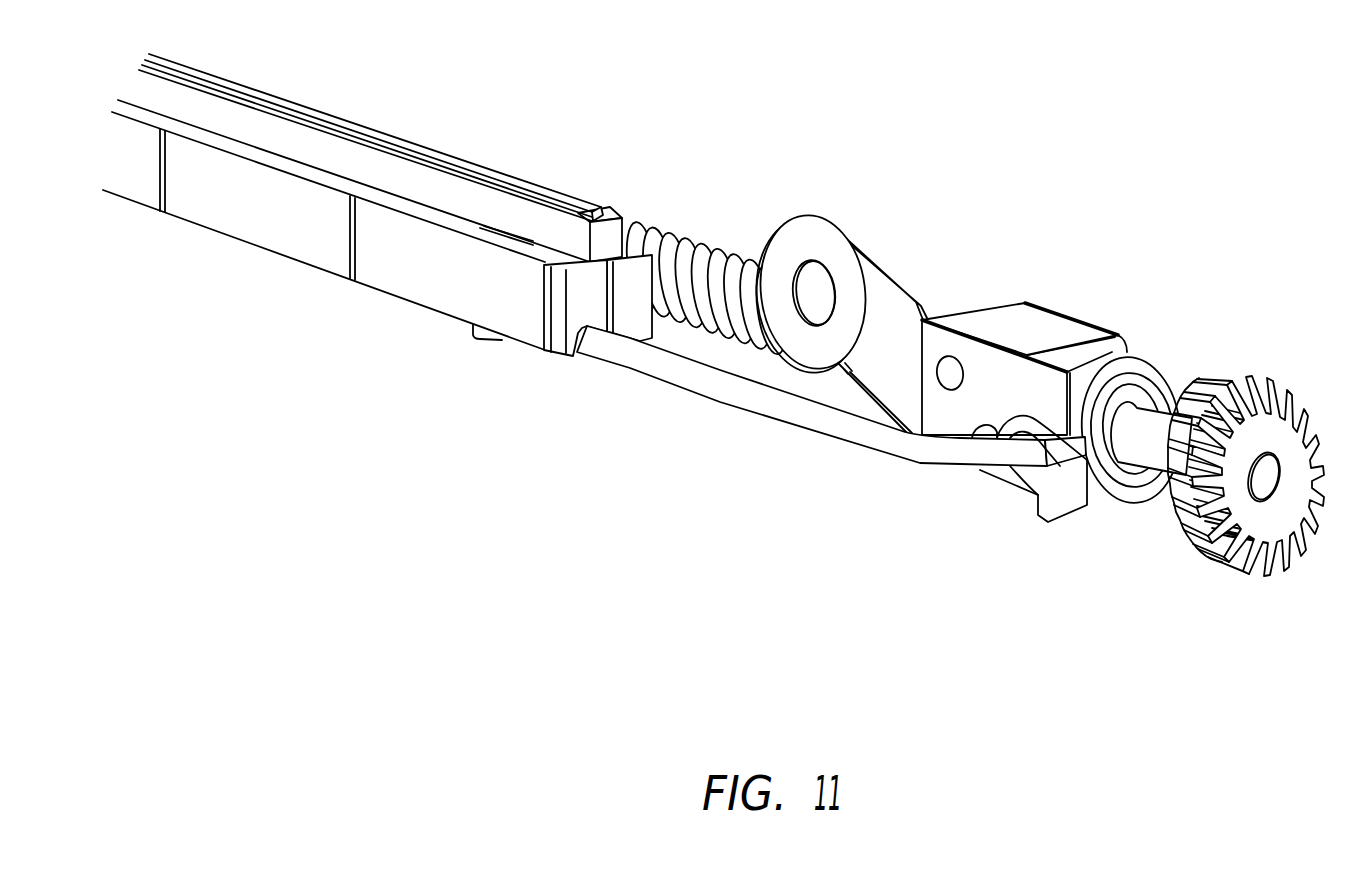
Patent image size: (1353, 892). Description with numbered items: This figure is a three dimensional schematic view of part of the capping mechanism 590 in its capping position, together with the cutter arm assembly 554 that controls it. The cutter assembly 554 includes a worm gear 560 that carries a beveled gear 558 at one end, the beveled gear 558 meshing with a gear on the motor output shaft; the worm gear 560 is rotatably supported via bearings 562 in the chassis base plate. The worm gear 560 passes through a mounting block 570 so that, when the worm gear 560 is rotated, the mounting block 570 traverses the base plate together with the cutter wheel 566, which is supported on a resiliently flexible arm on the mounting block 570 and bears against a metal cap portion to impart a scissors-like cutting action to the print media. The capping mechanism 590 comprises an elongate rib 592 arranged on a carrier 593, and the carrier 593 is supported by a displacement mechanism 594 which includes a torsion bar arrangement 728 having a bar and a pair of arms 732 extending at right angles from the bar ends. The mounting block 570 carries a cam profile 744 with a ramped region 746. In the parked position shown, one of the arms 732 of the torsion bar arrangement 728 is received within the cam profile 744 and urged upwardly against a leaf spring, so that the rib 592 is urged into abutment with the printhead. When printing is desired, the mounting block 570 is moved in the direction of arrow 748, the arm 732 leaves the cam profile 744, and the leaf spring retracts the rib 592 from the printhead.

The cutter arm assembly 554 is at (958, 258).
The beveled gear 558 is at (1237, 566).
The worm gear 560 is at (700, 243).
The bearings 562 is at (1172, 369).
The cutter wheel 566 is at (838, 228).
The mounting block 570 is at (1058, 320).
The capping mechanism 590 is at (500, 147).
The elongate rib 592 is at (613, 210).
The carrier 593 is at (546, 322).
The displacement mechanism 594 is at (775, 440).
The torsion bar arrangement 728 is at (680, 372).
The arms 732 is at (965, 453).
The cam profile 744 is at (1057, 525).
The ramped region 746 is at (1030, 497).
The arrow 748 is at (870, 485).